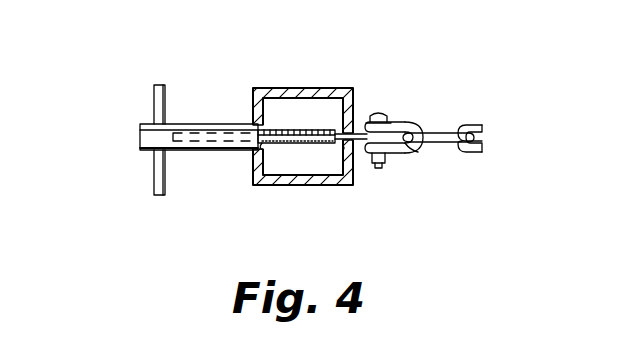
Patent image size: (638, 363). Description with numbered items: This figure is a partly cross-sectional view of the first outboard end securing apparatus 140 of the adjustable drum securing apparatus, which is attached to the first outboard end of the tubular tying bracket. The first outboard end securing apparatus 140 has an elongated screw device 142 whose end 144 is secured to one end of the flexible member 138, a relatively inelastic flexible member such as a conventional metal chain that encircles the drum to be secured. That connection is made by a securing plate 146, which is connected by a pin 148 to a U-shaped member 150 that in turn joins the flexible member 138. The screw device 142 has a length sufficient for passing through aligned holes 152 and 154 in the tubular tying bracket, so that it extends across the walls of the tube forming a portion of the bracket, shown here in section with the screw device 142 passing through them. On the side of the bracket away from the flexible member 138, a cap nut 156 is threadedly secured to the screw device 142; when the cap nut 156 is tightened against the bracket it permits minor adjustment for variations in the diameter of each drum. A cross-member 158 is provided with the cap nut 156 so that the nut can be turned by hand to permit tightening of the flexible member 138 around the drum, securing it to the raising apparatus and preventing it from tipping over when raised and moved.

The flexible member 138 is at (470, 125).
The first outboard end securing apparatus 140 is at (260, 60).
The screw device 142 is at (362, 118).
The end 144 is at (343, 147).
The securing plate 146 is at (358, 140).
The pin 148 is at (383, 113).
The U-shaped member 150 is at (416, 153).
The hole 152 is at (343, 125).
The hole 154 is at (265, 146).
The cap nut 156 is at (138, 141).
The cross-member 158 is at (156, 95).